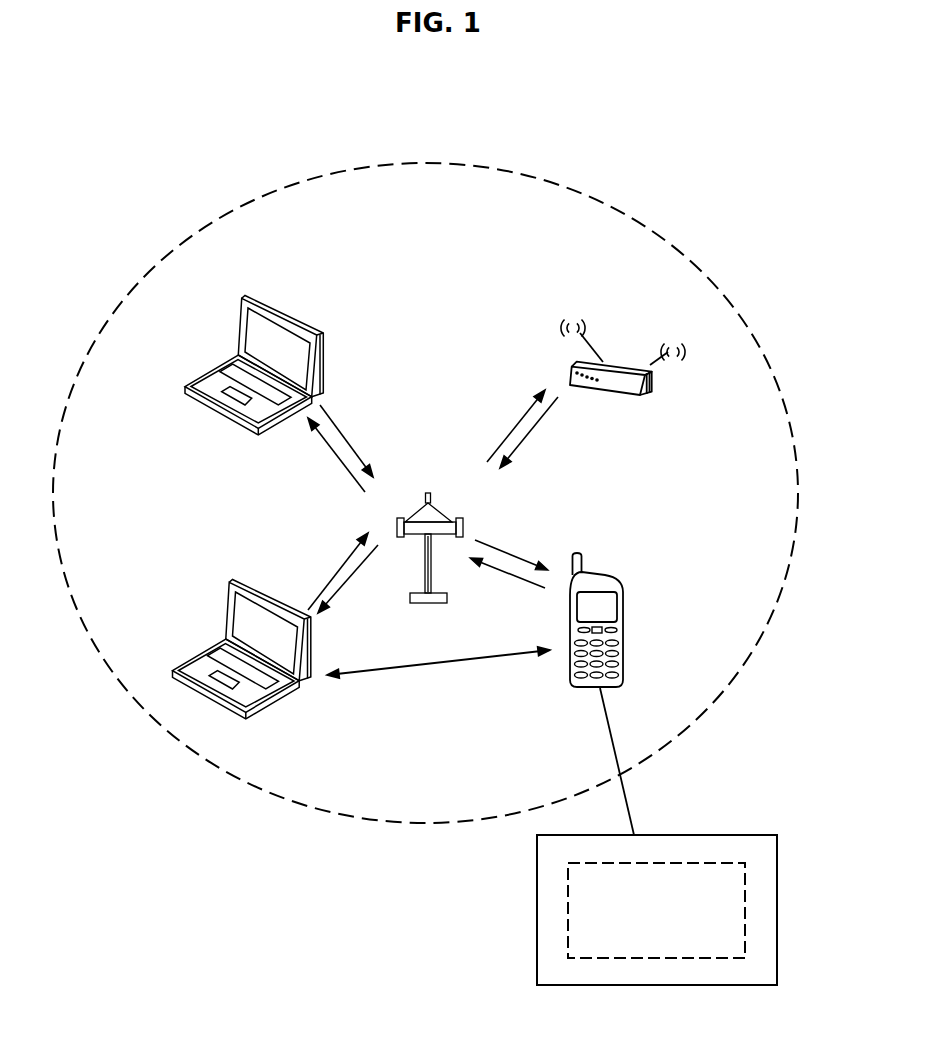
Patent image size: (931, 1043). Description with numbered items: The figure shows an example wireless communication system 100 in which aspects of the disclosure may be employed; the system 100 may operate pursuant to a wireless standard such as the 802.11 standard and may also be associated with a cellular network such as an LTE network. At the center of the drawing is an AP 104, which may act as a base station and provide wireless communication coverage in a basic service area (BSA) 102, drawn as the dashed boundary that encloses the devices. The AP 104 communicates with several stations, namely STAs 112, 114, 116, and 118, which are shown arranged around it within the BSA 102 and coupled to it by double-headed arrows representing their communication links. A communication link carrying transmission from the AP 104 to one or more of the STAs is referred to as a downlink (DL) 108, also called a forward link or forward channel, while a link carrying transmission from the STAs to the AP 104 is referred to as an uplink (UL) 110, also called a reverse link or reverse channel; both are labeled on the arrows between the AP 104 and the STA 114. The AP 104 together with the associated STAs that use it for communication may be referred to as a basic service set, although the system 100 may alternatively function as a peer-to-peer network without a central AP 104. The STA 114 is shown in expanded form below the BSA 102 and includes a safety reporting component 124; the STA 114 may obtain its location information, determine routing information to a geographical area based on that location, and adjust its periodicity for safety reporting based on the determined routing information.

The wireless communication system 100 is at (169, 122).
The basic service area 102 is at (432, 163).
The AP 104 is at (427, 492).
The downlink 108 is at (511, 557).
The uplink 110 is at (523, 581).
The STA 112 is at (604, 360).
The STA 114 is at (698, 767).
The STA 116 is at (244, 297).
The STA 118 is at (235, 583).
The safety reporting component 124 is at (745, 898).